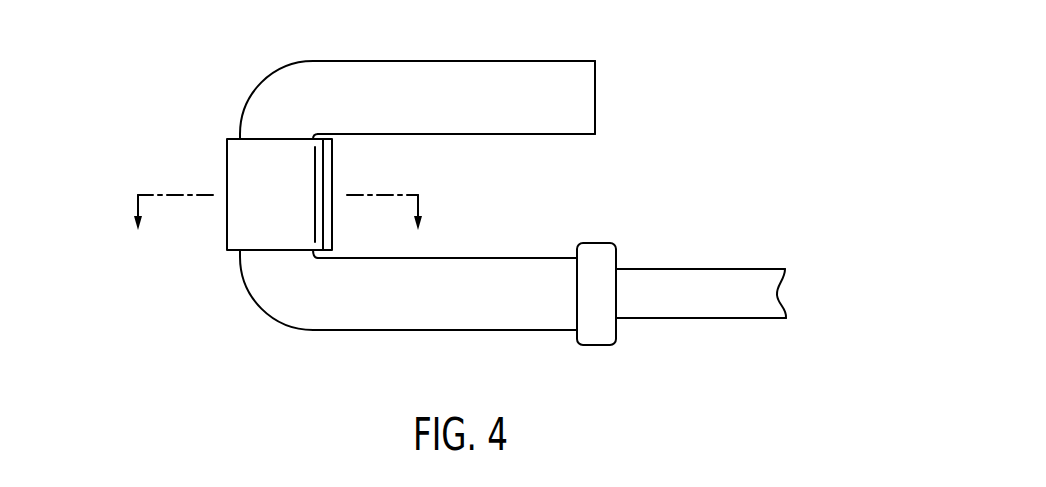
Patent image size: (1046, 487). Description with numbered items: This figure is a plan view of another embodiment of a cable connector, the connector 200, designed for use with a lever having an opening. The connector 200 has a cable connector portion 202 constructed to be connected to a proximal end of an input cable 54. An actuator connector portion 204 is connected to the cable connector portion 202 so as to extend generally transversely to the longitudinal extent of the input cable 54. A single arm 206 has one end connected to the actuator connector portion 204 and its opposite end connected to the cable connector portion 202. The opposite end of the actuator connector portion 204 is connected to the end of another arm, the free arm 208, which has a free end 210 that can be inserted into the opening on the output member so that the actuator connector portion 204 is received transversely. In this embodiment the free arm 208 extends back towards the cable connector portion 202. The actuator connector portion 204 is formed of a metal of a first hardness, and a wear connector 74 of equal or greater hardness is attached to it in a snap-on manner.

The connector 200 is at (216, 367).
The cable connector portion 202 is at (492, 318).
The actuator connector portion 204 is at (262, 262).
The arm 206 is at (367, 310).
The free arm 208 is at (425, 76).
The free end 210 is at (577, 93).
The wear connector 74 is at (243, 172).
The input cable 54 is at (710, 283).